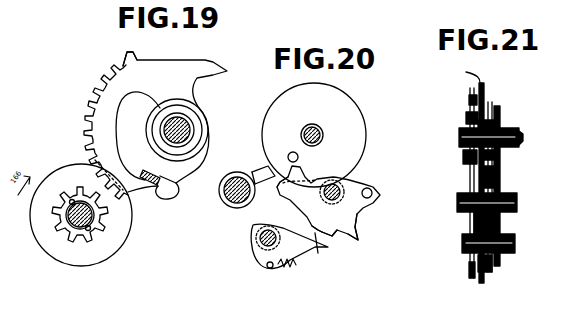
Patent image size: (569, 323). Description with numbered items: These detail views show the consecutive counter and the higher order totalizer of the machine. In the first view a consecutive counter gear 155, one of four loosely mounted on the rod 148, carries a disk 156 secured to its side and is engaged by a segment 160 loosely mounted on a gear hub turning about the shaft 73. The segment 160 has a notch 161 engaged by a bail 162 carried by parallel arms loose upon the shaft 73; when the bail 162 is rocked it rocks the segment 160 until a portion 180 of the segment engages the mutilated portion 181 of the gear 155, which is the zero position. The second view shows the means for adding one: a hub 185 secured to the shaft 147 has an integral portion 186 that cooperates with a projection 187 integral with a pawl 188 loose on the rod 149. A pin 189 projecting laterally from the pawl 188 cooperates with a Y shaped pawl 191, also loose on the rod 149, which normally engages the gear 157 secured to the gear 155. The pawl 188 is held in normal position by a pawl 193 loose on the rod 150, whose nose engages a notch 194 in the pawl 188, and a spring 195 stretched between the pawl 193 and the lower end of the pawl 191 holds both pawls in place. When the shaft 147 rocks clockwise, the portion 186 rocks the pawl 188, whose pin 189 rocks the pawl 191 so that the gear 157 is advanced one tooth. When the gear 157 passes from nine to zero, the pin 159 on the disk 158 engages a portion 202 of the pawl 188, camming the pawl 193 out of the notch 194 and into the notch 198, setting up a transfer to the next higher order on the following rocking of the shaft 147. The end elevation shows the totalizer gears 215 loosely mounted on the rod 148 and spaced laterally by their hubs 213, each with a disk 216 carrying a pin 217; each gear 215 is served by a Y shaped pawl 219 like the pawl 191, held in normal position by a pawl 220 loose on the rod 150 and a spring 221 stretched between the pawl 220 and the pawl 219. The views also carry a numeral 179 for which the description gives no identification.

In FIG. 19, the shaft 73 is at (186, 122).
In FIG. 20, the shaft 147 is at (230, 205).
In FIG. 19, the rod 148 is at (74, 228).
In FIG. 20, the rod 148 is at (320, 128).
In FIG. 21, the rod 148 is at (521, 128).
In FIG. 20, the rod 149 is at (334, 190).
In FIG. 21, the rod 149 is at (513, 193).
In FIG. 20, the rod 150 is at (255, 247).
In FIG. 21, the rod 150 is at (508, 249).
In FIG. 19, the consecutive counter gear 155 is at (58, 223).
In FIG. 21, the consecutive counter gear 155 is at (493, 103).
In FIG. 19, the disk 156 is at (108, 252).
In FIG. 21, the disk 156 is at (459, 72).
In FIG. 21, the gear 157 is at (470, 96).
In FIG. 21, the disk 158 is at (468, 118).
In FIG. 21, the pin 159 is at (463, 157).
In FIG. 19, the segment 160 is at (105, 108).
In FIG. 19, the notch 161 is at (168, 196).
In FIG. 19, the bail 162 is at (160, 180).
In FIG. 19, the cam plate 179 is at (226, 72).
In FIG. 19, the portion 180 is at (118, 60).
In FIG. 19, the mutilated portion 181 is at (95, 199).
In FIG. 20, the hub 185 is at (232, 173).
In FIG. 20, the portion 186 is at (262, 172).
In FIG. 20, the projection 187 is at (278, 190).
In FIG. 20, the pawl 188 is at (354, 238).
In FIG. 21, the pawl 188 is at (499, 178).
In FIG. 20, the pin 189 is at (373, 190).
In FIG. 21, the pin 189 is at (468, 193).
In FIG. 21, the Y shaped pawl 191 is at (473, 219).
In FIG. 20, the pawl 193 is at (333, 243).
In FIG. 20, the notch 194 is at (335, 233).
In FIG. 20, the spring 195 is at (272, 268).
In FIG. 20, the notch 198 is at (317, 254).
In FIG. 20, the portion 202 is at (310, 167).
In FIG. 21, the hub 213 is at (503, 121).
In FIG. 21, the totalizer gear 215 is at (500, 108).
In FIG. 20, the disk 216 is at (355, 137).
In FIG. 21, the disk 216 is at (487, 100).
In FIG. 20, the pin 217 is at (293, 152).
In FIG. 21, the pin 217 is at (500, 153).
In FIG. 21, the Y shaped pawl 219 is at (493, 222).
In FIG. 21, the pawl 220 is at (484, 273).
In FIG. 21, the spring 221 is at (480, 266).